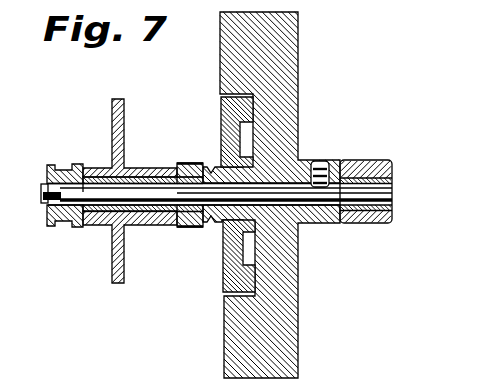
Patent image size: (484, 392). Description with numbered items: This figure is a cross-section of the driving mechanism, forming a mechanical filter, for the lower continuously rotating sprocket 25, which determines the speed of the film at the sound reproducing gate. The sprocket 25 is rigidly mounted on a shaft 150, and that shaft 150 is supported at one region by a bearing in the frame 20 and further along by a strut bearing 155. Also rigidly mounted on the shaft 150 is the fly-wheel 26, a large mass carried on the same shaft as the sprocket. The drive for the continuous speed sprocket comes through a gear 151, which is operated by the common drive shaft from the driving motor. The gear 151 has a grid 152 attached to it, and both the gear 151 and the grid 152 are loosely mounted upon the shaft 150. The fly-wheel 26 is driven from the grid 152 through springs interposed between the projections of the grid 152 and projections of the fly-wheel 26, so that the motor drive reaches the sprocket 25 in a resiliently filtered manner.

The fly-wheel 26 is at (297, 78).
The strut bearing 155 is at (365, 160).
The shaft 150 is at (313, 206).
The gear 151 is at (188, 228).
The grid 152 is at (223, 266).
The lower continuously rotating sprocket 25 is at (50, 227).
The frame 20 is at (117, 284).